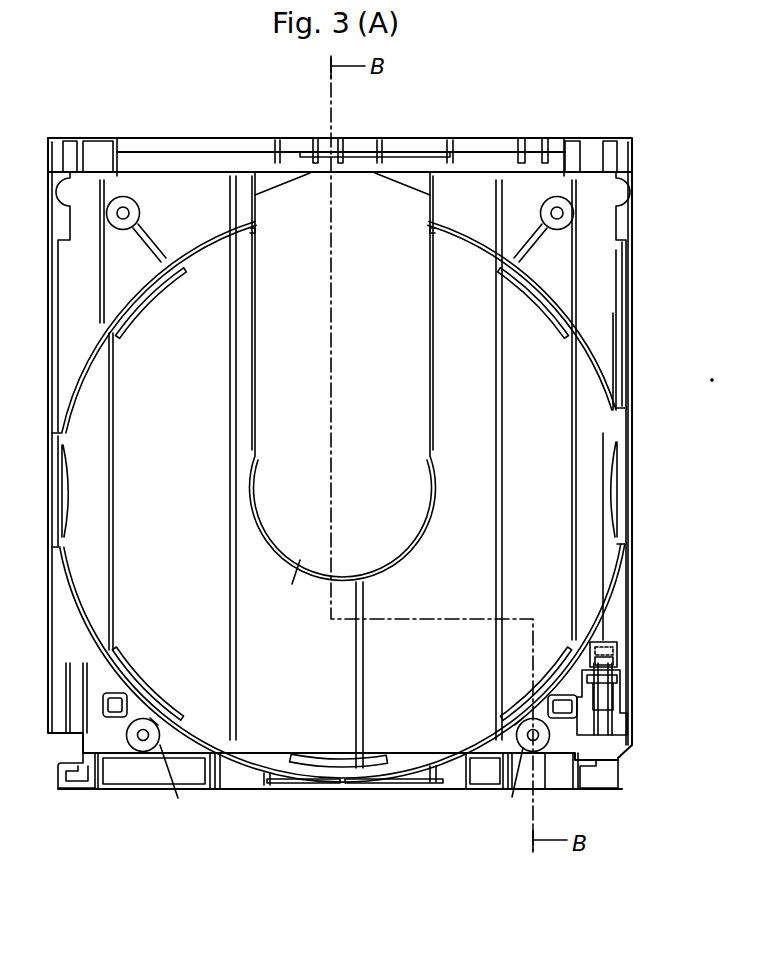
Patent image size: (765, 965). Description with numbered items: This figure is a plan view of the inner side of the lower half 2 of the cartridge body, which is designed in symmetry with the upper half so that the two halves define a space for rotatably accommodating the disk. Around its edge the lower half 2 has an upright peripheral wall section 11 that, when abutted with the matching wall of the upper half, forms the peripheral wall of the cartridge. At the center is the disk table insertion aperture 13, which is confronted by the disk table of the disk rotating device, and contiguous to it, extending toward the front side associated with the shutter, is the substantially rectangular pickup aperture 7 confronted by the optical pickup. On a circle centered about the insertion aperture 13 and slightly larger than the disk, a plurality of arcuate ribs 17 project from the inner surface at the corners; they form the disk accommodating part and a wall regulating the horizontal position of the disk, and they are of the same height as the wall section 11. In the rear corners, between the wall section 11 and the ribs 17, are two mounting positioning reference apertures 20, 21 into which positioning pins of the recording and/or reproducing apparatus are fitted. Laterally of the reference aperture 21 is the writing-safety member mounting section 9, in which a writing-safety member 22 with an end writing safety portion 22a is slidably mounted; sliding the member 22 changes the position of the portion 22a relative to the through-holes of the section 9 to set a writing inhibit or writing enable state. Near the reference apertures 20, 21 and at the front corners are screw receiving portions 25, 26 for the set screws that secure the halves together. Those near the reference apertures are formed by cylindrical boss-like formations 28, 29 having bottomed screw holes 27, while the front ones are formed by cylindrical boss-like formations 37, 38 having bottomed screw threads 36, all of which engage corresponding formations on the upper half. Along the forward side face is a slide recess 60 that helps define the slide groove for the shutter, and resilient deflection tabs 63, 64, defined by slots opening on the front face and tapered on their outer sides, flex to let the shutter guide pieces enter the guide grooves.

The lower half 2 is at (661, 157).
The pickup aperture 7 is at (428, 388).
The writing-safety member mounting section 9 is at (617, 655).
The upright peripheral wall section 11 is at (633, 305).
The disk table insertion aperture 13 is at (285, 585).
The arcuate rib 17 is at (125, 305).
The mounting positioning reference aperture 20 is at (108, 704).
The mounting positioning reference aperture 21 is at (562, 700).
The writing-safety member 22 is at (605, 697).
The writing safety portion 22a is at (615, 645).
The screw receiving portion 25 is at (105, 222).
The screw receiving portion 26 is at (557, 213).
The bottomed screw hole 27 is at (147, 728).
The cylindrical boss-like formation 28 is at (180, 784).
The cylindrical boss-like formation 29 is at (504, 785).
The bottomed screw thread 36 is at (129, 213).
The cylindrical boss-like formation 37 is at (125, 230).
The cylindrical boss-like formation 38 is at (557, 228).
The slide recess 60 is at (430, 150).
The resilient deflection tab 63 is at (325, 138).
The resilient deflection tab 64 is at (529, 138).